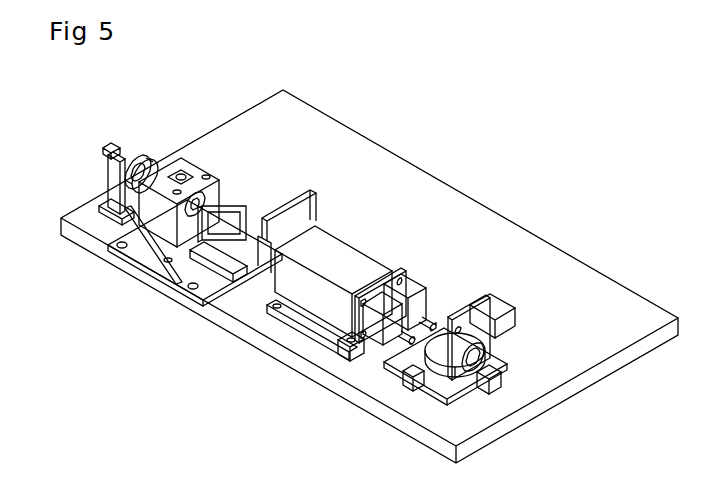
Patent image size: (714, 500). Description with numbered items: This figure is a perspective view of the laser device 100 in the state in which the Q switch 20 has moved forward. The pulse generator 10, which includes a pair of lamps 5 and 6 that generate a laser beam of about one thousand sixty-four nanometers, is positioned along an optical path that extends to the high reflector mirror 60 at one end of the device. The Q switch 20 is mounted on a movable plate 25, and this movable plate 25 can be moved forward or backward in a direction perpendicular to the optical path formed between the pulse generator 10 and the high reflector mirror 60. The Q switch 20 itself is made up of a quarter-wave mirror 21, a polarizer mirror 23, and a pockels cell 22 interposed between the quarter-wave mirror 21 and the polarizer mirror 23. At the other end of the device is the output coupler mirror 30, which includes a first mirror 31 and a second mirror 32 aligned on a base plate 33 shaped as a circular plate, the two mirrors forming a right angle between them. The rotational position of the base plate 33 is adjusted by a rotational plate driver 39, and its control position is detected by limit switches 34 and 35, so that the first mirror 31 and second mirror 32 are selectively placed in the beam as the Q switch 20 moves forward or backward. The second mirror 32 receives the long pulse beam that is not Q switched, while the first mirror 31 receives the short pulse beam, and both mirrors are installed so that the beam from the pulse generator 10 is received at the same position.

The laser device 100 is at (372, 162).
The pulse generator 10 is at (352, 258).
The Q switch 20 is at (240, 186).
The quarter-wave mirror 21 is at (112, 205).
The pockels cell 22 is at (142, 238).
The polarizer mirror 23 is at (168, 262).
The movable plate 25 is at (220, 262).
The output coupler mirror 30 is at (505, 347).
The first mirror 31 is at (488, 346).
The second mirror 32 is at (458, 316).
The base plate 33 is at (468, 396).
The limit switch 34 is at (410, 386).
The limit switch 35 is at (500, 390).
The rotational plate driver 39 is at (490, 300).
The lamp 5 is at (374, 376).
The lamp 6 is at (432, 314).
The high reflector mirror 60 is at (136, 156).